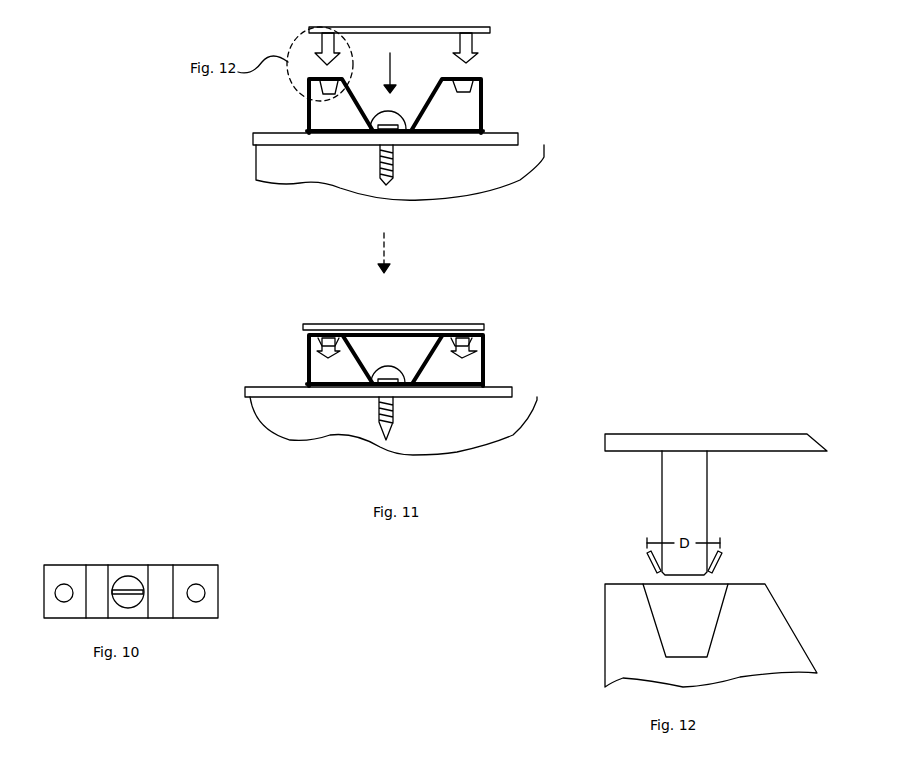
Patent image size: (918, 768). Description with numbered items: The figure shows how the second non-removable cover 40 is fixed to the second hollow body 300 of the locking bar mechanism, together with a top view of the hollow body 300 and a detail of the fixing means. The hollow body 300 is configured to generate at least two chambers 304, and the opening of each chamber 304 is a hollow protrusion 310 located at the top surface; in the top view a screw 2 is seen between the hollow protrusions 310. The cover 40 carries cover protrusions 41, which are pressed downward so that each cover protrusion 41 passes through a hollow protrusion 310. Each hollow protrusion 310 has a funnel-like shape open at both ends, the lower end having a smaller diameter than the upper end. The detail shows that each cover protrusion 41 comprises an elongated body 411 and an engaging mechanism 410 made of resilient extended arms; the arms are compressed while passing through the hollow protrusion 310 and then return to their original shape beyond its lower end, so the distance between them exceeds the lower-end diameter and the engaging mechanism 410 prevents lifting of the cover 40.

In FIG. 10, the screw 2 is at (128, 578).
In FIG. 11, the second non-removable cover 40 is at (490, 31).
In FIG. 12, the second non-removable cover 40 is at (703, 443).
In FIG. 11, the cover protrusion 41 is at (478, 53).
In FIG. 11, the second hollow body 300 is at (483, 124).
In FIG. 10, the second hollow body 300 is at (218, 609).
In FIG. 11, the chamber 304 is at (335, 240).
In FIG. 11, the hollow protrusion 310 is at (468, 88).
In FIG. 12, the hollow protrusion 310 is at (685, 620).
In FIG. 10, the hollow protrusion 310 is at (203, 591).
In FIG. 12, the engaging mechanism 410 is at (718, 557).
In FIG. 12, the elongated body 411 is at (697, 485).